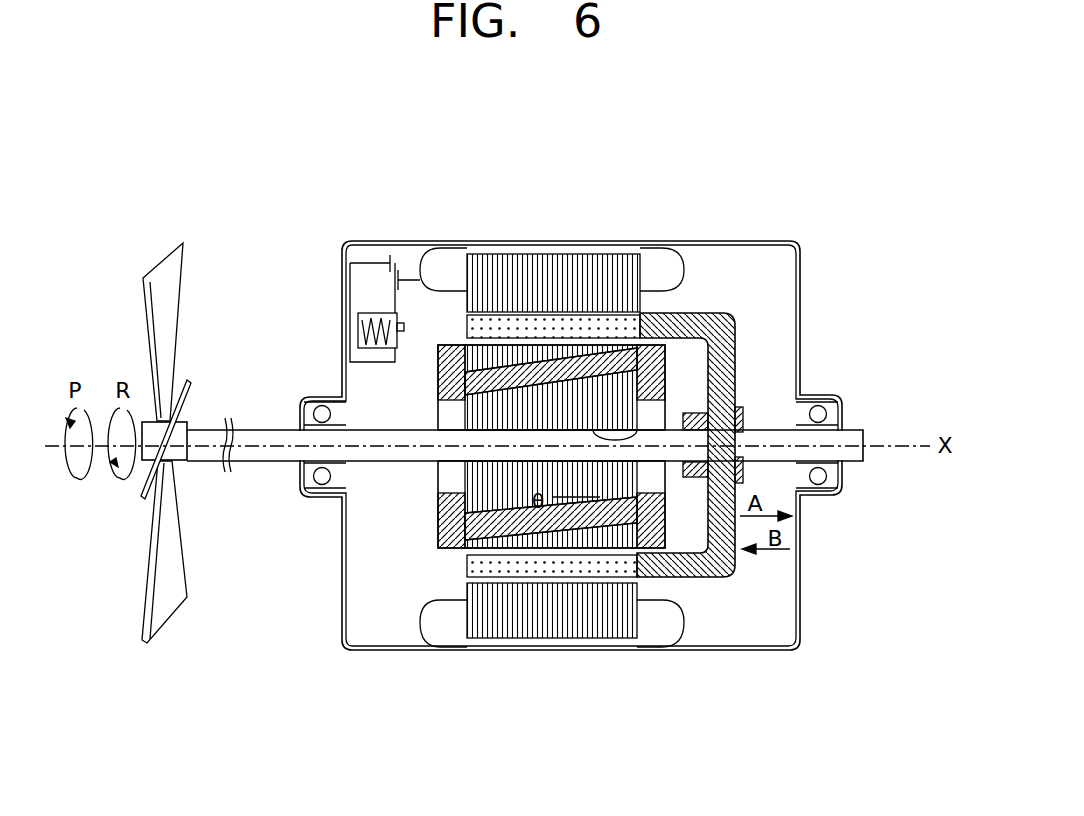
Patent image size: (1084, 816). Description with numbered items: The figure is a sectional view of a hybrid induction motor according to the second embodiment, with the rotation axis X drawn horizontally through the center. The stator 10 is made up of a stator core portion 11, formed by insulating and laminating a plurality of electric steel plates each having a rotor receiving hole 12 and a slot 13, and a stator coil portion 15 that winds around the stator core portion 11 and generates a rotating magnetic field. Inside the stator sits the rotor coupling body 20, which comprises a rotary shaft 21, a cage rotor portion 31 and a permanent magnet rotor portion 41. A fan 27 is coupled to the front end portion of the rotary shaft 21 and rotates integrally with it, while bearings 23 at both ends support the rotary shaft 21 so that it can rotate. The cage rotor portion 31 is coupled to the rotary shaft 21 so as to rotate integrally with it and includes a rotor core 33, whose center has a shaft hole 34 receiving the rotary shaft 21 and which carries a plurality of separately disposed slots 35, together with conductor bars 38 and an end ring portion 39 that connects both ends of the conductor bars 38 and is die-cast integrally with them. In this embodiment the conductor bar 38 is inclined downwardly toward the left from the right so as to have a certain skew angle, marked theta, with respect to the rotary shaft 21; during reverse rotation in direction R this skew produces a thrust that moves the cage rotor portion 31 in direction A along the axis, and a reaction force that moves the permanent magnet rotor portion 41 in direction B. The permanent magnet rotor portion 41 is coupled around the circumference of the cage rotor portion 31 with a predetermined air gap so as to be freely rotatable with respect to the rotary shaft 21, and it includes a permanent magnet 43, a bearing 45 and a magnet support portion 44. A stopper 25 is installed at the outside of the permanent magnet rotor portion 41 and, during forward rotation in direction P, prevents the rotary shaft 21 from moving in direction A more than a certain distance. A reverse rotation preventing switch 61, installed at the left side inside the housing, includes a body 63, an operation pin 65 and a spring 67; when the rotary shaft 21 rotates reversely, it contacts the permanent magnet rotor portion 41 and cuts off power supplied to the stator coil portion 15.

The stator 10 is at (552, 217).
The stator core portion 11 is at (553, 237).
The rotor receiving hole 12 is at (537, 318).
The slot 13 is at (500, 262).
The stator coil portion 15 is at (518, 129).
The rotor coupling body 20 is at (718, 308).
The rotary shaft 21 is at (855, 452).
The bearings 23 is at (830, 408).
The stopper 25 is at (745, 478).
The fan 27 is at (162, 278).
The cage rotor portion 31 is at (579, 444).
The rotor core 33 is at (599, 410).
The shaft hole 34 is at (595, 437).
The slots 35 is at (615, 385).
The conductor bar 38 is at (437, 543).
The end ring portion 39 is at (480, 528).
The permanent magnet rotor portion 41 is at (552, 633).
The permanent magnet 43 is at (553, 578).
The magnet support portion 44 is at (640, 560).
The bearing 45 is at (630, 513).
The reverse rotation preventing switch 61 is at (347, 249).
The body 63 is at (372, 312).
The operation pin 65 is at (401, 323).
The spring 67 is at (352, 316).